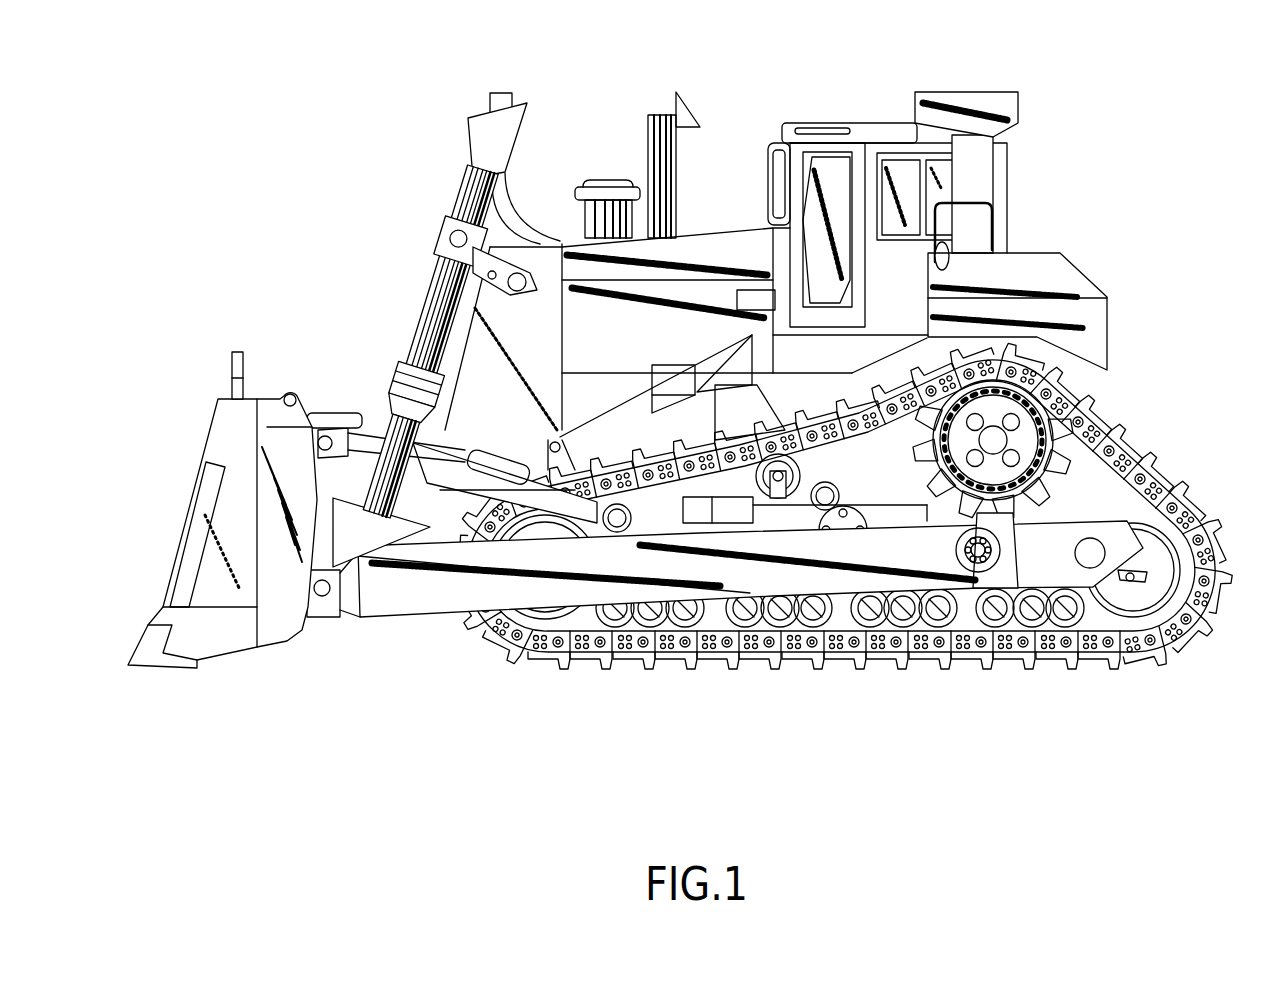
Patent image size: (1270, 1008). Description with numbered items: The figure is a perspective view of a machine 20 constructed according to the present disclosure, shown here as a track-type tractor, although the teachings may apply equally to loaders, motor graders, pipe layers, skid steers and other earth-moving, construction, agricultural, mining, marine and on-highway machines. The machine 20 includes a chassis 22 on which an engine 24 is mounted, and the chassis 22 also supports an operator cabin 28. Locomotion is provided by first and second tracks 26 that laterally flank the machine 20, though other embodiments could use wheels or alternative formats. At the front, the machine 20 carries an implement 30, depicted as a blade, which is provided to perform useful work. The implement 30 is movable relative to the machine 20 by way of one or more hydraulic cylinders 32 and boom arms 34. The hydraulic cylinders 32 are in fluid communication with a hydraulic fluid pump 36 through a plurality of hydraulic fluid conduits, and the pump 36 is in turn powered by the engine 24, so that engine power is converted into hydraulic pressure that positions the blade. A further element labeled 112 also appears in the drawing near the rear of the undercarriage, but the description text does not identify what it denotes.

The machine 20 is at (447, 148).
The chassis 22 is at (887, 450).
The engine 24 is at (632, 349).
The tracks 26 is at (648, 662).
The operator cabin 28 is at (850, 150).
The implement 30 is at (188, 510).
The hydraulic cylinders 32 is at (447, 198).
The boom arms 34 is at (443, 597).
The hydraulic fluid pump 36 is at (760, 275).
The rear idler 112 is at (1068, 498).